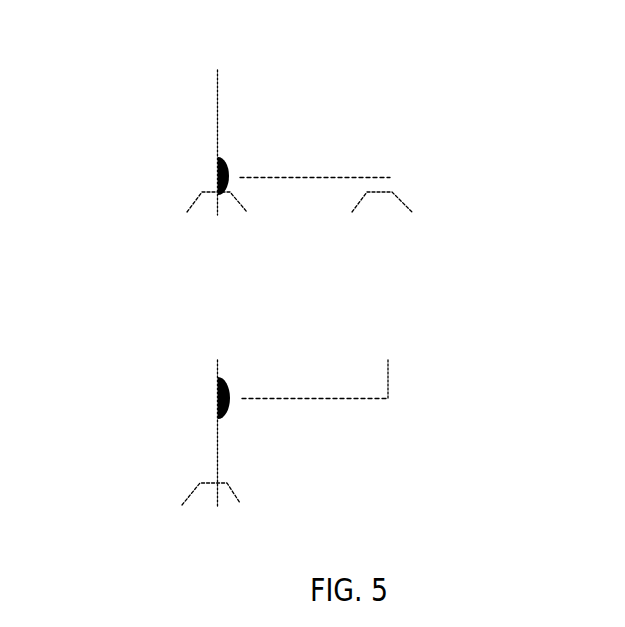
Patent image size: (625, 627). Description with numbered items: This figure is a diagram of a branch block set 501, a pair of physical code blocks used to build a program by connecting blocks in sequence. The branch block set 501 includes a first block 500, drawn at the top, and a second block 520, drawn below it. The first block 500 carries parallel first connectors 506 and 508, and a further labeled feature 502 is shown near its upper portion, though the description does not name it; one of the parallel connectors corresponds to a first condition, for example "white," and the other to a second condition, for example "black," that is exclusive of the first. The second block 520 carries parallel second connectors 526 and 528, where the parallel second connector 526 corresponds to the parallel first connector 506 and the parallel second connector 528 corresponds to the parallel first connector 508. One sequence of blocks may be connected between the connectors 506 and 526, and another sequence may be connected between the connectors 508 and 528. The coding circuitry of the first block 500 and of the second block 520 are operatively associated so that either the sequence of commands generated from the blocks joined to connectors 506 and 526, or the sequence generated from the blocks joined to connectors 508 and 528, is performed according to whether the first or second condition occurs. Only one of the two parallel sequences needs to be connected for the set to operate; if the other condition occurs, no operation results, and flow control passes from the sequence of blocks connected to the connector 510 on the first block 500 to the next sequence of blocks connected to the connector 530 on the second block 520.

The first block 500 is at (455, 168).
The branch block set 501 is at (108, 112).
The joint region 502 is at (287, 78).
The parallel first connector 506 is at (242, 206).
The parallel first connector 508 is at (390, 192).
The connector 510 is at (238, 63).
The second block 520 is at (468, 351).
The parallel second connector 526 is at (213, 352).
The parallel second connector 528 is at (382, 348).
The connector 530 is at (236, 497).